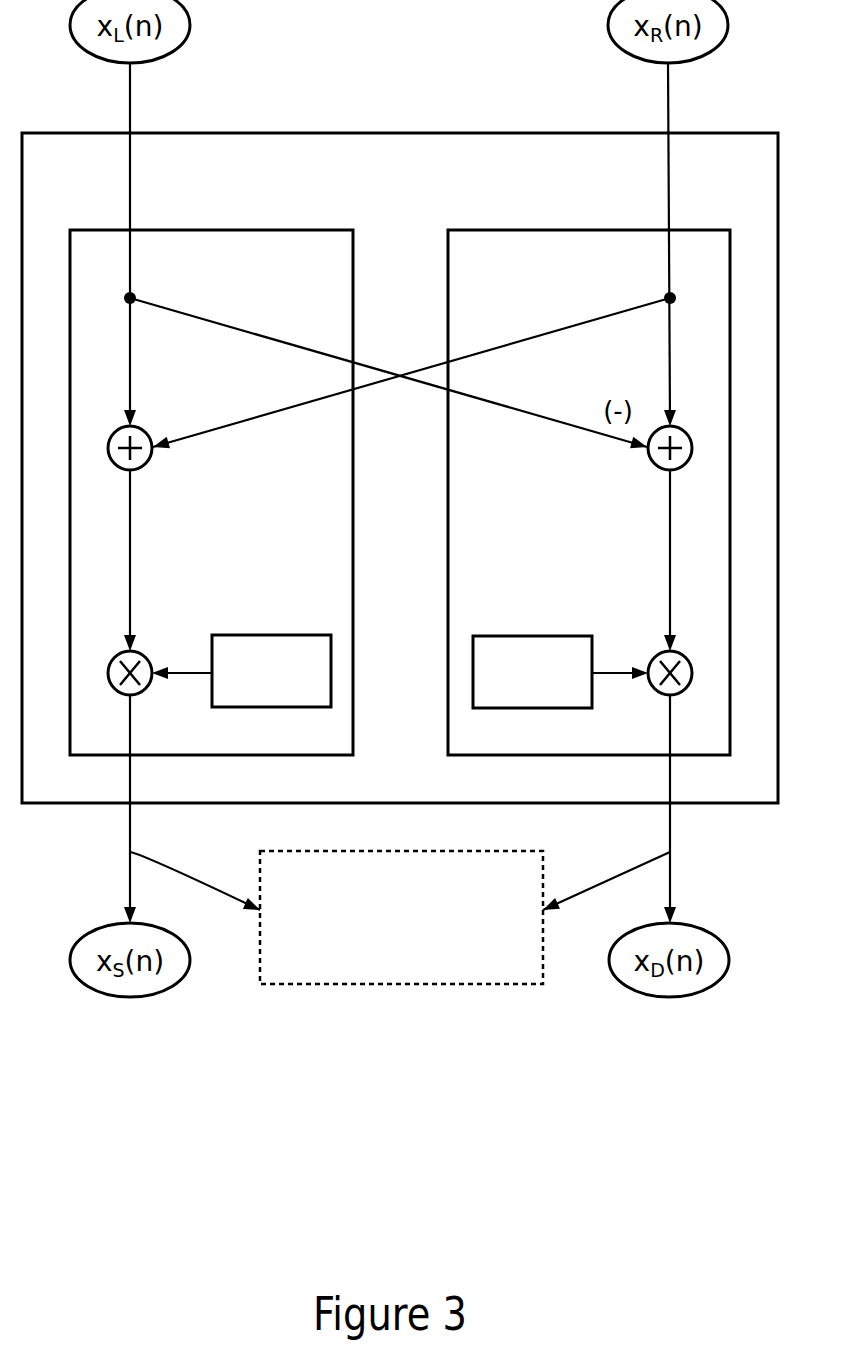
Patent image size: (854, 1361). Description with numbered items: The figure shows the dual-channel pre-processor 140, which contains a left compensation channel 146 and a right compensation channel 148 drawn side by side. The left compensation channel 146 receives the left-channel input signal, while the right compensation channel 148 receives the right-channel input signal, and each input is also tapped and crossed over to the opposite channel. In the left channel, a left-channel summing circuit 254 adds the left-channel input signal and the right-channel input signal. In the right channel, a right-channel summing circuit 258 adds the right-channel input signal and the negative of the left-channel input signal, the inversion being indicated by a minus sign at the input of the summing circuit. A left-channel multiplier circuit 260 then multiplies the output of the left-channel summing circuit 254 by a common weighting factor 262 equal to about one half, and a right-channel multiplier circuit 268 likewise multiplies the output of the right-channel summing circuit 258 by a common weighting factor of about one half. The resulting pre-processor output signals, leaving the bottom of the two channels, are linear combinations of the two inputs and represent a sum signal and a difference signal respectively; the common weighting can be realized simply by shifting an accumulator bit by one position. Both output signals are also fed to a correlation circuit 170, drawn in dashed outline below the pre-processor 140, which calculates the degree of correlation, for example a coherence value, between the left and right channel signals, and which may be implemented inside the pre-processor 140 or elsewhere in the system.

The dual-channel pre-processor 140 is at (612, 187).
The left compensation channel 146 is at (332, 282).
The right compensation channel 148 is at (517, 280).
The left-channel summing circuit 254 is at (152, 463).
The right-channel summing circuit 258 is at (649, 463).
The left-channel multiplier circuit 260 is at (148, 657).
The common weighting factor 262 is at (283, 635).
The right-channel multiplier circuit 268 is at (652, 657).
The correlation circuit 170 is at (522, 636).